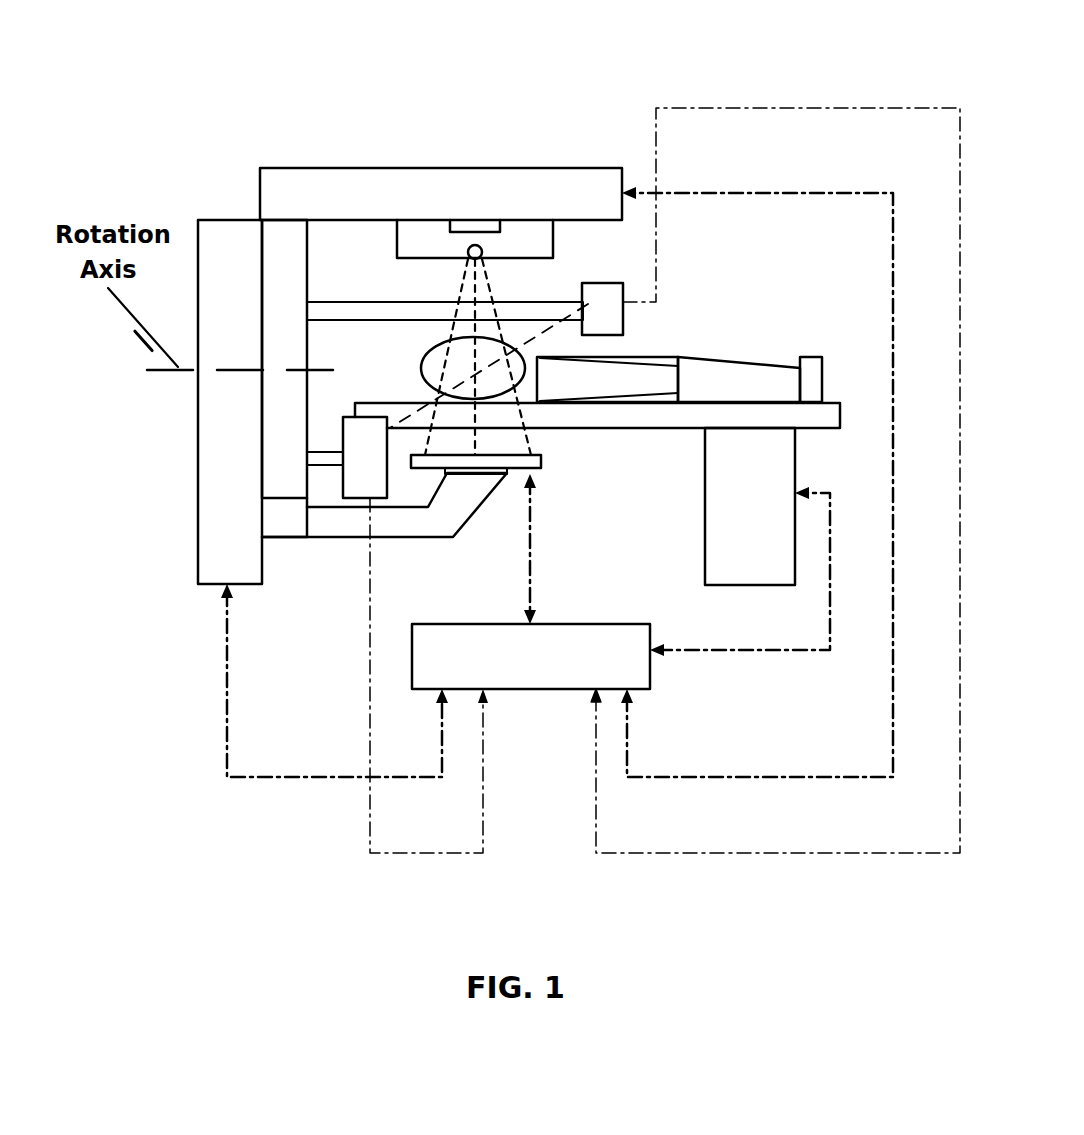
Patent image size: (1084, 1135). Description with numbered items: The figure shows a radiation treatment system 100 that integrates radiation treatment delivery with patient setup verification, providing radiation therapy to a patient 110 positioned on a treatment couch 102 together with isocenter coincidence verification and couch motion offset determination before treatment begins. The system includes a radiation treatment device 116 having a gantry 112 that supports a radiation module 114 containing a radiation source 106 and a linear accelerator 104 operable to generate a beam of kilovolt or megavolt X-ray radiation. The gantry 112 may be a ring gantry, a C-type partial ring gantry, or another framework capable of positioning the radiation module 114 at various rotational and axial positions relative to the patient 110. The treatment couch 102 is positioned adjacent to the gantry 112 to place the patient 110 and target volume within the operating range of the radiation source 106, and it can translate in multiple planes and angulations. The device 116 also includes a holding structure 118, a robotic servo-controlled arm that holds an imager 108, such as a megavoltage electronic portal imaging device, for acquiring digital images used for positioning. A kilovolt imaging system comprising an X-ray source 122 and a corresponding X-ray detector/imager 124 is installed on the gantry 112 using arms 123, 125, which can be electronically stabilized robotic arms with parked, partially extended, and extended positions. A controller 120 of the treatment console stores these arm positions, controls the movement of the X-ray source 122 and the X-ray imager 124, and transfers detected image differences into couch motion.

The radiation treatment system 100 is at (842, 102).
The treatment couch 102 is at (743, 402).
The linear accelerator 104 is at (479, 219).
The radiation source 106 is at (479, 248).
The imager 108 is at (542, 468).
The patient 110 is at (657, 356).
The gantry 112 is at (258, 192).
The radiation module 114 is at (542, 233).
The radiation treatment device 116 is at (198, 560).
The holding structure 118 is at (425, 526).
The controller 120 is at (412, 657).
The X-ray source 122 is at (625, 300).
The arm 123 is at (368, 300).
The X-ray detector/imager 124 is at (343, 478).
The arm 125 is at (307, 449).